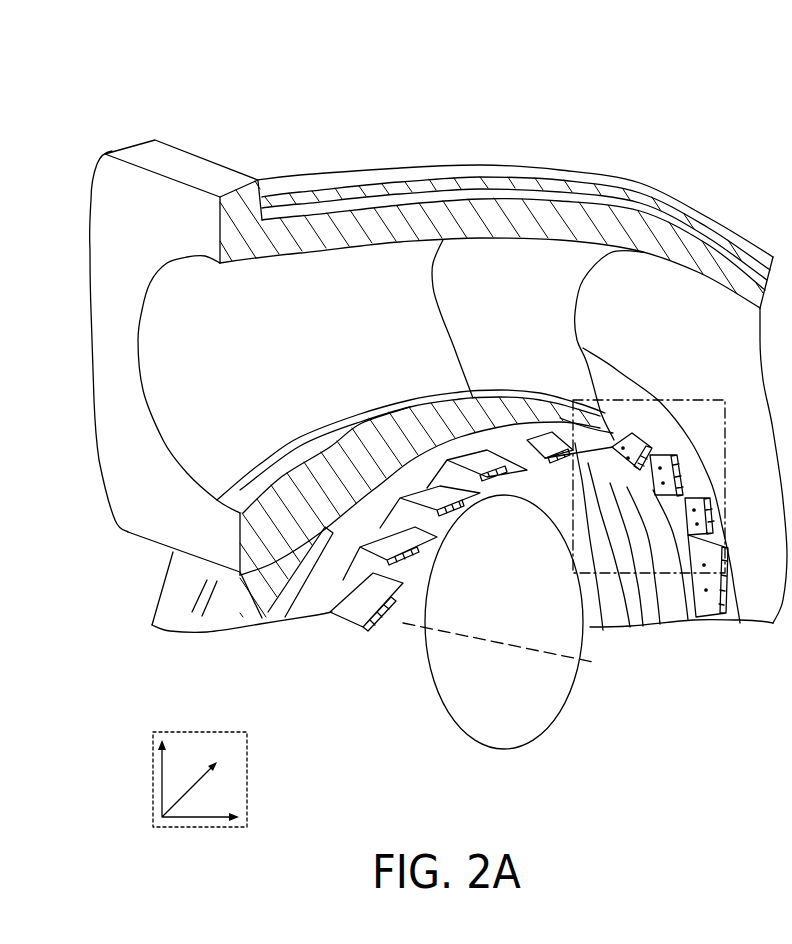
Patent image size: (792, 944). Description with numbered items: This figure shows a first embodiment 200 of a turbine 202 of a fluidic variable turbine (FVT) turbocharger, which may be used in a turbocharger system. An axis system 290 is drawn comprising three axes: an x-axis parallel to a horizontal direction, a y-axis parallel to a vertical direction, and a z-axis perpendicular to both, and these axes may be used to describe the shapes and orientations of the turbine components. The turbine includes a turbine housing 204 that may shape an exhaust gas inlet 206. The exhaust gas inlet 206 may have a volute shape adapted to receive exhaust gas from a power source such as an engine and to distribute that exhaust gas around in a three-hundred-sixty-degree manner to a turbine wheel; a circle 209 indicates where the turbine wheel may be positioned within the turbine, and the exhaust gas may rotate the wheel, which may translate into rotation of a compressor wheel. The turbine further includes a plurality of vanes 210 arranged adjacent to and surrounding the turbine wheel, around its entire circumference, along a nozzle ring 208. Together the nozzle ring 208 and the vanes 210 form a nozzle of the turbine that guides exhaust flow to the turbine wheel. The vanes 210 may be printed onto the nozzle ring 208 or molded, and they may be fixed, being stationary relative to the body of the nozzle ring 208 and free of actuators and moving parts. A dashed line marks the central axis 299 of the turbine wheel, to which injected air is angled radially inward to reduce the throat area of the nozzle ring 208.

The first embodiment 200 is at (700, 77).
The turbine 202 is at (652, 176).
The turbine housing 204 is at (153, 148).
The exhaust gas inlet 206 is at (266, 387).
The nozzle ring 208 is at (620, 603).
The circle 209 is at (521, 632).
The plurality of vanes 210 is at (370, 630).
The axis system 290 is at (247, 750).
The central axis 299 is at (440, 630).